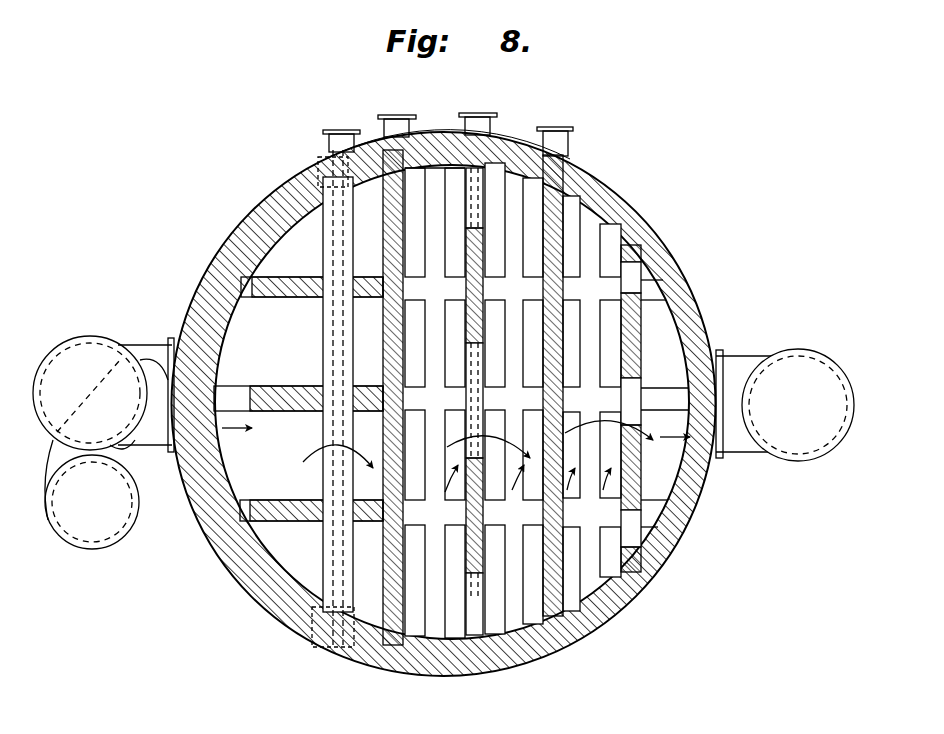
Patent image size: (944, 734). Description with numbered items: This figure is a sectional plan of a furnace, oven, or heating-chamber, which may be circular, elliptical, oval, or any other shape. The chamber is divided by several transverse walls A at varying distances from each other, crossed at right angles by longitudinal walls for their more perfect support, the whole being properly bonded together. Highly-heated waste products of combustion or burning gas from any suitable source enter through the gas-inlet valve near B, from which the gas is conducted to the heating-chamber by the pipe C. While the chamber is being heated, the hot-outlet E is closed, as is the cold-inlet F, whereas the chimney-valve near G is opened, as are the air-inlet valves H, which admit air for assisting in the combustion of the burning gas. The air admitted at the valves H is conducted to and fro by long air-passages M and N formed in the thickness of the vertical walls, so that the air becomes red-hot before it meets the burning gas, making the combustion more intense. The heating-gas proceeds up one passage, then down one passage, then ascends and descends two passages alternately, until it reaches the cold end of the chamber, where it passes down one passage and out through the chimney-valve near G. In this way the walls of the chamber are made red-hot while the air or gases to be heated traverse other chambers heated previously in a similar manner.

The air-inlet valves H is at (448, 125).
The air-passage M is at (333, 398).
The air-passage N is at (473, 397).
The transverse walls A is at (507, 400).
The hot-outlet E is at (90, 393).
The gas-inlet valve B is at (92, 502).
The pipe C is at (106, 439).
The chimney-valve G is at (798, 405).
The cold-inlet F is at (785, 404).